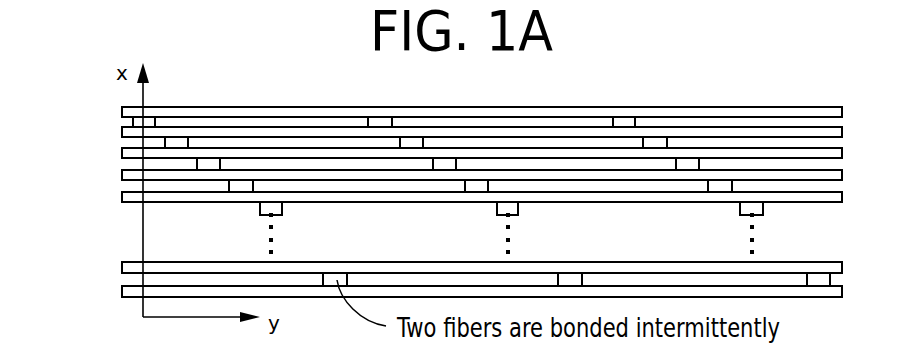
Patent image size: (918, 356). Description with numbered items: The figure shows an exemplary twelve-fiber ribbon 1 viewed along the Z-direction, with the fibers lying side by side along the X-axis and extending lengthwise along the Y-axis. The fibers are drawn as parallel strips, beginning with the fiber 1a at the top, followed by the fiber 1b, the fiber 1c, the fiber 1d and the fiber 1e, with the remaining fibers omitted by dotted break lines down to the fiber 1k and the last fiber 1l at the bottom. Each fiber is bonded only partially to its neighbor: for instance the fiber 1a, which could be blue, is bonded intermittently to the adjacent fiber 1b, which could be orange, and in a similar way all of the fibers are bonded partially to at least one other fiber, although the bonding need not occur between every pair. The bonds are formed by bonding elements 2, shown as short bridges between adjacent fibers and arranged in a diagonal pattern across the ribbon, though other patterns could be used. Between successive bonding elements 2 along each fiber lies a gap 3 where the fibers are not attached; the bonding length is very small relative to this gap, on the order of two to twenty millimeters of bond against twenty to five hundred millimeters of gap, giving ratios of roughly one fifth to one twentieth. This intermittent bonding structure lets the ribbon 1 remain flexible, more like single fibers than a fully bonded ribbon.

The fiber ribbon 1 is at (806, 87).
The fiber 1a is at (452, 93).
The fiber 1b is at (122, 132).
The fiber 1c is at (122, 156).
The fiber 1d is at (122, 176).
The fiber 1e is at (122, 202).
The fiber 1k is at (122, 268).
The fiber 1l is at (122, 295).
The bonding element 2 is at (156, 119).
The gap 3 is at (253, 116).